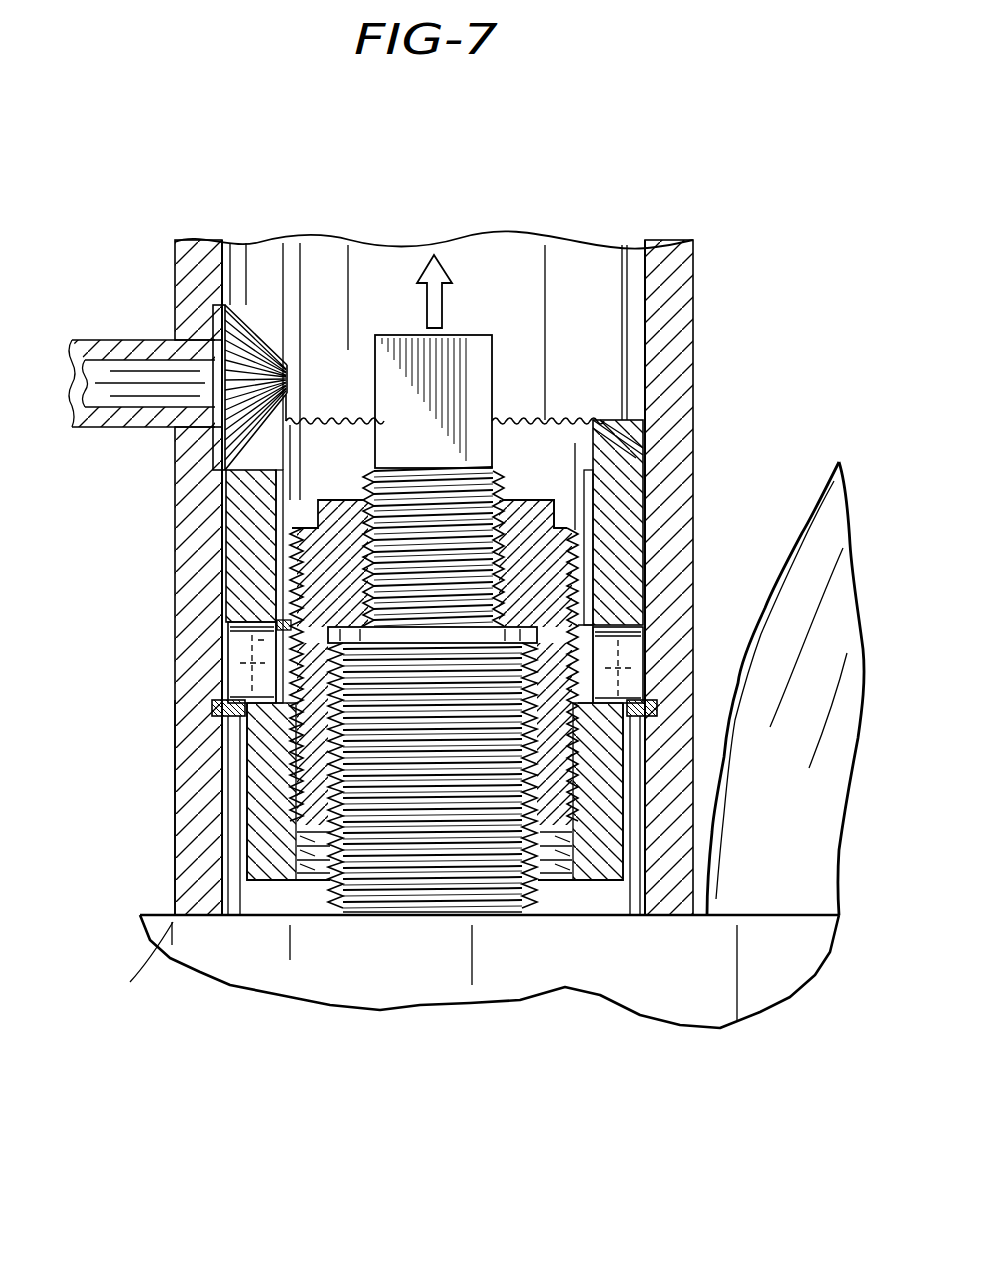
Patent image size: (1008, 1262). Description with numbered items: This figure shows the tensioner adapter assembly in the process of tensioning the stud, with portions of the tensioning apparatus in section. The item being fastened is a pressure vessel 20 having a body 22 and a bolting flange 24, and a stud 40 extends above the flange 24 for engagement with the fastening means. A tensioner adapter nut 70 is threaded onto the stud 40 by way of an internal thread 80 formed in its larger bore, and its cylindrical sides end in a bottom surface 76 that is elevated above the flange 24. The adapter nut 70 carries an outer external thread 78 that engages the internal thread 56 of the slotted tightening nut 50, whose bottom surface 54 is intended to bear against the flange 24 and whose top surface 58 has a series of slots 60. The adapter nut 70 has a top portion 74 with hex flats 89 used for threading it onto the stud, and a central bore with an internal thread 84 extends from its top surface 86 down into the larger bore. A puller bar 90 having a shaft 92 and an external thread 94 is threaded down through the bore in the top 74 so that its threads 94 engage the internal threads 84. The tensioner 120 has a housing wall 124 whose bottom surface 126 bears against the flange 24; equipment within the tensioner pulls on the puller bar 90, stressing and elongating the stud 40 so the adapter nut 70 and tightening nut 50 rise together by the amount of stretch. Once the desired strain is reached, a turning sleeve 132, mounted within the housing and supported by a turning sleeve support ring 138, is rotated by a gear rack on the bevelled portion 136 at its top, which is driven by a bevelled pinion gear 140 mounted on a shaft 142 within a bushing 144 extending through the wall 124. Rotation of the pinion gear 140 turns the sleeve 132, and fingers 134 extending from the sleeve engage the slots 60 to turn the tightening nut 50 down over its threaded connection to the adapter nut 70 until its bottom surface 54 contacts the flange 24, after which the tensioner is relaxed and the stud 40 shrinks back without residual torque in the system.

The pressure vessel 20 is at (835, 462).
The body 22 is at (808, 515).
The bolting flange 24 is at (150, 910).
The stud 40 is at (435, 873).
The slotted tightening nut 50 is at (246, 843).
The bottom surface 54 is at (262, 880).
The internal thread 56 is at (322, 887).
The top surface 58 is at (600, 615).
The slots 60 is at (250, 665).
The tensioner adapter nut 70 is at (571, 540).
The top portion 74 is at (530, 503).
The bottom surface 76 is at (542, 823).
The outer external thread 78 is at (577, 785).
The internal thread 80 is at (337, 807).
The internal thread 84 is at (372, 525).
The top surface 86 is at (362, 488).
The hex flats 89 is at (315, 512).
The puller bar 90 is at (493, 351).
The plunger 92 is at (470, 347).
The external thread 94 is at (517, 420).
The tensioner 120 is at (174, 258).
The housing wall 124 is at (178, 798).
The bottom surface 126 is at (122, 962).
The turning sleeve 132 is at (245, 590).
The fingers 134 is at (250, 650).
The bevelled portion 136 is at (640, 445).
The turning sleeve support ring 138 is at (212, 708).
The bevelled pinion gear 140 is at (268, 318).
The shaft 142 is at (122, 377).
The bushing 144 is at (128, 430).